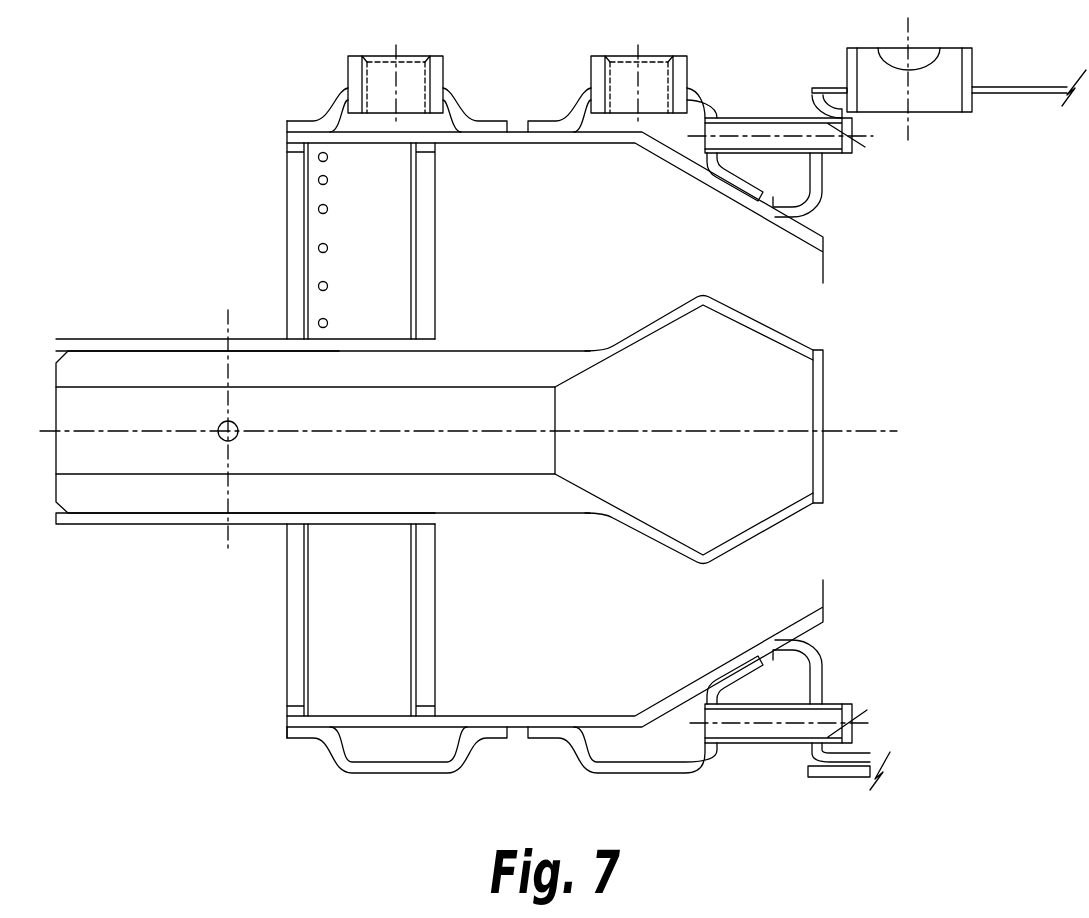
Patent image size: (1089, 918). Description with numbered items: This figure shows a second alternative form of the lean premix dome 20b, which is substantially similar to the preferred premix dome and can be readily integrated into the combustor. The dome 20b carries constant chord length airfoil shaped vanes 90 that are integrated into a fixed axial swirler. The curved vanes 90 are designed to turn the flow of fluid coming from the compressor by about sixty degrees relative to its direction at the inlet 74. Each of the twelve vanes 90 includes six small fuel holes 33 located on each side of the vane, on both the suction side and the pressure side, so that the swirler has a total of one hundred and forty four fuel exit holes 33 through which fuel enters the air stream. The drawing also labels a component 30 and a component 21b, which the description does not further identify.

The clamp strap 30 is at (342, 122).
The fuel holes 33 is at (315, 200).
The inlet 74 is at (270, 268).
The vanes 90 is at (372, 192).
The hexagonal tube end 21b is at (798, 367).
The lean premix dome 20b is at (685, 790).